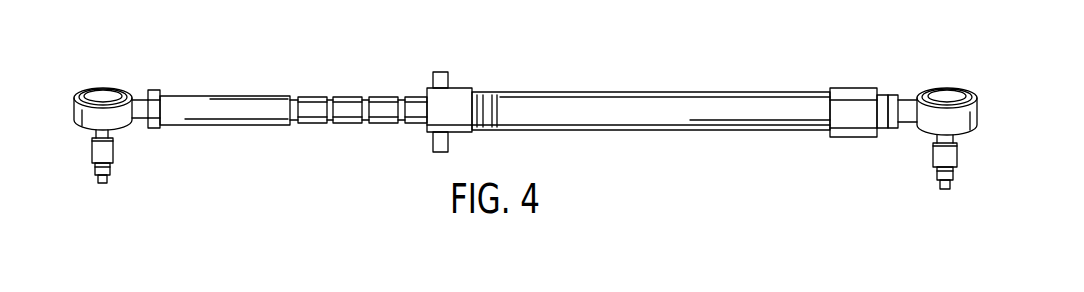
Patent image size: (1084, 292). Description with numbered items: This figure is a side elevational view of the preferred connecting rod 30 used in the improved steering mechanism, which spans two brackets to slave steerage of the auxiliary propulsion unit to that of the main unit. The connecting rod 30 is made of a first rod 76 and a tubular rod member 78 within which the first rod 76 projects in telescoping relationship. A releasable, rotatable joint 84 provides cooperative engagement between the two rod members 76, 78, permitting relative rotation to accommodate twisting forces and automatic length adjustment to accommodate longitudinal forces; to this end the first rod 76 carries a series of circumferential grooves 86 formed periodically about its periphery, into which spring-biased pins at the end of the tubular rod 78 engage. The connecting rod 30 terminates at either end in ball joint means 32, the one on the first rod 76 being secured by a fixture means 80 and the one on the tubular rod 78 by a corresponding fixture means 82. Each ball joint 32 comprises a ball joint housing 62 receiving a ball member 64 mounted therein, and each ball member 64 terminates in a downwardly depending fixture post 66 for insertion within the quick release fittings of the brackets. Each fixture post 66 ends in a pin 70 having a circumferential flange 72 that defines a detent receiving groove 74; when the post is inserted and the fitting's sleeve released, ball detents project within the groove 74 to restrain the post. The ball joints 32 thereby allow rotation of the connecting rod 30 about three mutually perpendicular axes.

The connecting rod 30 is at (564, 86).
The ball joint connector 32 is at (94, 87).
The ball joint housing 62 is at (122, 120).
The ball member 64 is at (112, 97).
The fixture post 66 is at (113, 152).
The pin 70 is at (105, 184).
The circumferential flange 72 is at (110, 177).
The detent receiving groove 74 is at (113, 167).
The first rod 76 is at (238, 105).
The tubular rod member 78 is at (665, 105).
The fixture means 80 is at (160, 88).
The fixture means 82 is at (851, 87).
The releasable rotatable joint 84 is at (456, 87).
The circumferential grooves 86 is at (293, 98).